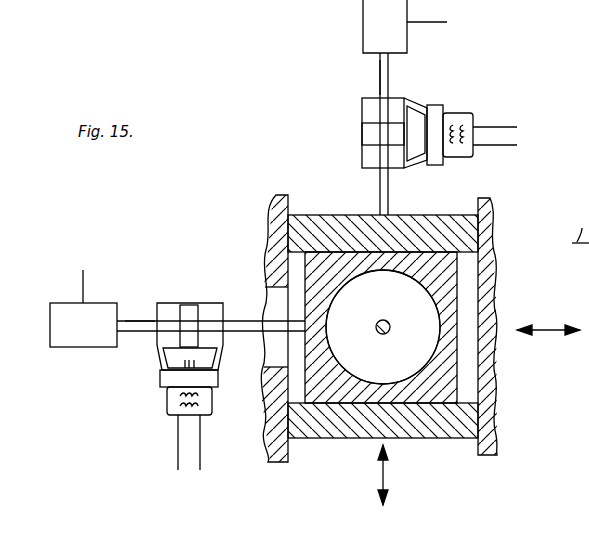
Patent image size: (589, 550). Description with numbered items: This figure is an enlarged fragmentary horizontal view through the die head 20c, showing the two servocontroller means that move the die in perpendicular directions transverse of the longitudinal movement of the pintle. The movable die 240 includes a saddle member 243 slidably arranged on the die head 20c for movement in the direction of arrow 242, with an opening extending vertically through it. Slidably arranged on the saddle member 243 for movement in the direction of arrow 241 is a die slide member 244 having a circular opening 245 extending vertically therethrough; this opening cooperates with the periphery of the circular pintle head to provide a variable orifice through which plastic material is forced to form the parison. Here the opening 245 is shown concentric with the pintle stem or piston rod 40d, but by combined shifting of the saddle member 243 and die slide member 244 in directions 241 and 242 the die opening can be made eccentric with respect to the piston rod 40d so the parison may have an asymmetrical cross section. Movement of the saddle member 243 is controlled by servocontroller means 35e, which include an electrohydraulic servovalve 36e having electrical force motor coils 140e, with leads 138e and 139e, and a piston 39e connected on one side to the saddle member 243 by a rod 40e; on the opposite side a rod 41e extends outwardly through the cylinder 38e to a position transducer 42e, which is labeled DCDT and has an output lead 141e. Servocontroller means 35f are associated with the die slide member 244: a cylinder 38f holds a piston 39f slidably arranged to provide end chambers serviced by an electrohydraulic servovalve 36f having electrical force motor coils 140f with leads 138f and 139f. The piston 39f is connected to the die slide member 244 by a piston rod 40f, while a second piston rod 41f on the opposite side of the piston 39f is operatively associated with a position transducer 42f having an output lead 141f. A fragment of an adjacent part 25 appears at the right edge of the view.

The die head 20c is at (495, 247).
The saddle member 243 is at (441, 214).
The die slide member 244 is at (501, 376).
The circular opening 245 is at (358, 272).
The piston rod 40d is at (383, 335).
The movable die 240 is at (307, 208).
The arrow 241 is at (548, 329).
The arrow 242 is at (383, 475).
The rod 40e is at (380, 190).
The position transducer 42e is at (356, 17).
The output lead 141e is at (447, 22).
The rod 41e is at (380, 80).
The cylinder 38e is at (363, 110).
The piston 39e is at (365, 134).
The servocontroller means 35e is at (409, 92).
The electrohydraulic servovalve 36e is at (451, 112).
The electrical force motor coils 140e is at (463, 125).
The output lead 138e is at (517, 127).
The output lead 139e is at (513, 147).
The frame 25 is at (580, 225).
The piston rod 40f is at (244, 320).
The position transducer 42f is at (66, 360).
The output lead 141f is at (83, 270).
The second piston rod 41f is at (133, 320).
The cylinder 38f is at (167, 305).
The piston 39f is at (193, 307).
The servocontroller means 35f is at (155, 303).
The electrohydraulic servovalve 36f is at (162, 390).
The electrical force motor coils 140f is at (197, 398).
The output lead 138f is at (177, 450).
The output lead 139f is at (200, 453).